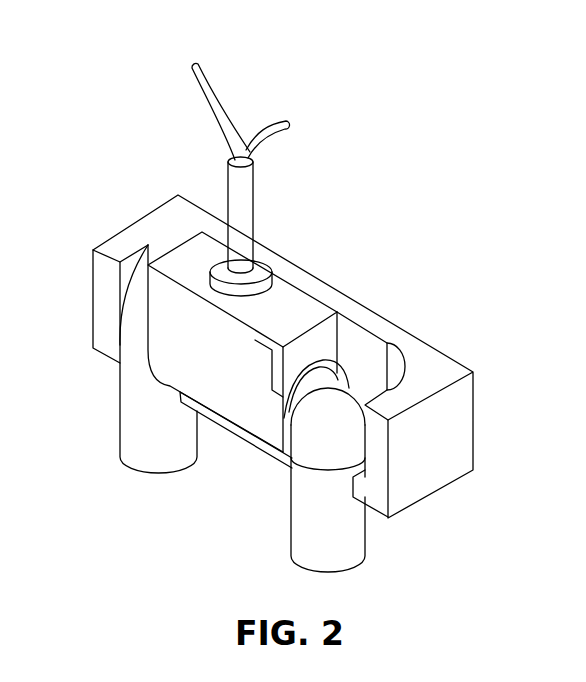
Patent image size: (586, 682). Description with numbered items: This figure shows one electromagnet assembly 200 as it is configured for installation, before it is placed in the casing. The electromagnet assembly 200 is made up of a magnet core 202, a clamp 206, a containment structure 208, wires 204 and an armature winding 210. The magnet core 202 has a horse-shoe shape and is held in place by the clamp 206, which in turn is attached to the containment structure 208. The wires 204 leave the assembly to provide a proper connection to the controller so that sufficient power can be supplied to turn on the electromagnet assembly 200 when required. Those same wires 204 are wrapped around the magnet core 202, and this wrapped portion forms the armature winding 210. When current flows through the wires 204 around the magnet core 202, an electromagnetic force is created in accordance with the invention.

The electromagnet assembly 200 is at (312, 29).
The magnet core 202 is at (122, 420).
The wires 204 is at (258, 118).
The clamp 206 is at (295, 305).
The containment structure 208 is at (403, 342).
The armature winding 210 is at (247, 410).